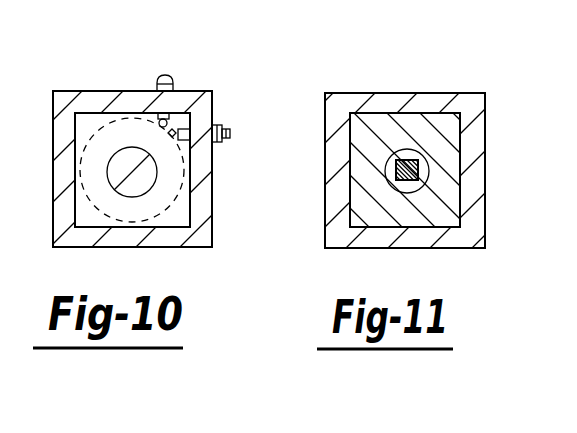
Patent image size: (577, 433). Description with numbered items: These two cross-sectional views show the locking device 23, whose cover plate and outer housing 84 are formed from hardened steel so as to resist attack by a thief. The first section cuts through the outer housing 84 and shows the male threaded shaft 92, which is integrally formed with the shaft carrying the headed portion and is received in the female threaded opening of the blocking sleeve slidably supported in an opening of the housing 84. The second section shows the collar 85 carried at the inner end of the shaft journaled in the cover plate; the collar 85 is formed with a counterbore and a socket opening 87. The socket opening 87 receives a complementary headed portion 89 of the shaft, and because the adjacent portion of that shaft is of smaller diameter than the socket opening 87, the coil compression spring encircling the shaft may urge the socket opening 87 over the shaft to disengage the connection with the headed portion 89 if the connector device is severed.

In FIG. 10, the locking device 23 is at (158, 126).
In FIG. 11, the locking device 23 is at (433, 126).
In FIG. 10, the outer housing 84 is at (187, 90).
In FIG. 10, the male threaded shaft 92 is at (158, 168).
In FIG. 11, the socket opening 87 is at (485, 130).
In FIG. 11, the collar 85 is at (418, 192).
In FIG. 11, the headed portion 89 is at (408, 158).